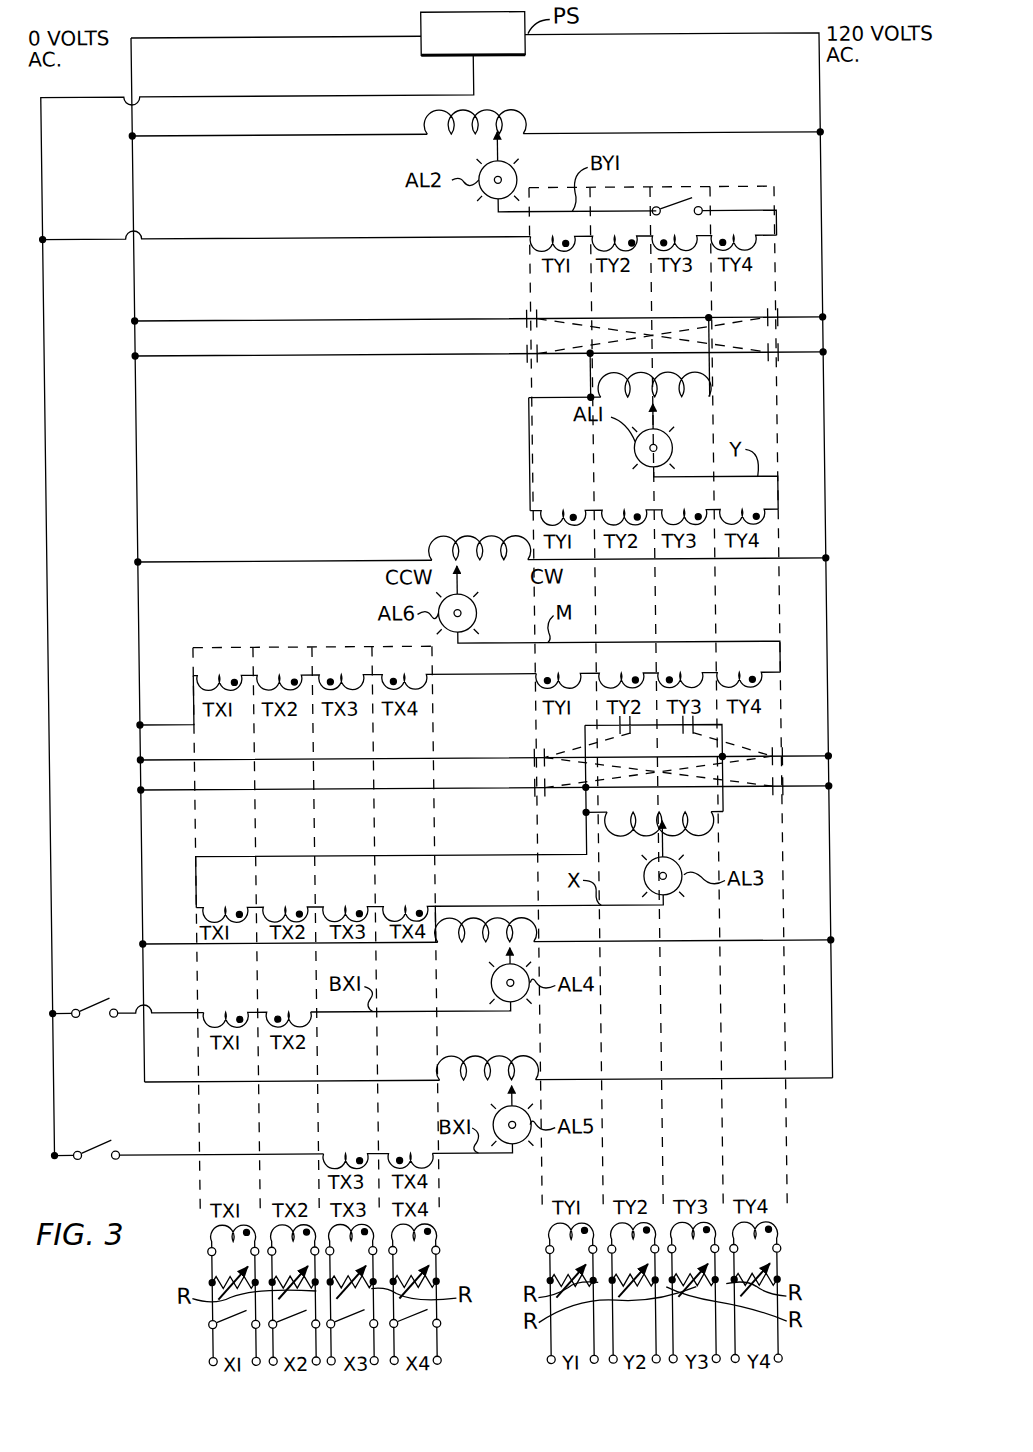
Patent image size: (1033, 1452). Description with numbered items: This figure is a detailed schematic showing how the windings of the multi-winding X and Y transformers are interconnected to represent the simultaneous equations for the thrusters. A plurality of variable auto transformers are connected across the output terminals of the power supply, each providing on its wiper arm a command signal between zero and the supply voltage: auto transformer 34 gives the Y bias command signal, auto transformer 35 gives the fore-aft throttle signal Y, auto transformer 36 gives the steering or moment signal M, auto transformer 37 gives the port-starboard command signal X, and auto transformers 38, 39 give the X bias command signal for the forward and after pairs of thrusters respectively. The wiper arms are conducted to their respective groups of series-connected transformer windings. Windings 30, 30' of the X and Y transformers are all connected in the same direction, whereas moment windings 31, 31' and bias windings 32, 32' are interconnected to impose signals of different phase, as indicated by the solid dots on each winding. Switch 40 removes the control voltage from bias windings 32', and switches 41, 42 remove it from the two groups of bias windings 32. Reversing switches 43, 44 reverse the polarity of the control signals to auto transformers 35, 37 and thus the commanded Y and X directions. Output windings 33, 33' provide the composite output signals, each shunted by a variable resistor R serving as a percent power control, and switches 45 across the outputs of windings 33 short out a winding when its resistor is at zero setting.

The winding 30 is at (316, 906).
The winding 30' is at (654, 499).
The moment winding 31 is at (367, 909).
The moment winding 31' is at (658, 644).
The bias winding 32 is at (318, 1070).
The bias winding 32' is at (654, 274).
The output winding 33 is at (277, 1295).
The output winding 33' is at (663, 1266).
The auto transformer 34 is at (508, 128).
The auto transformer 35 is at (690, 396).
The auto transformer 36 is at (472, 540).
The auto transformer 37 is at (684, 836).
The auto transformer 38 is at (530, 926).
The auto transformer 39 is at (528, 1064).
The switch 40 is at (668, 205).
The switch 41 is at (80, 1002).
The switch 42 is at (80, 1142).
The reversing switch 43 is at (648, 338).
The reversing switch 44 is at (658, 752).
The switch 45 is at (285, 1338).